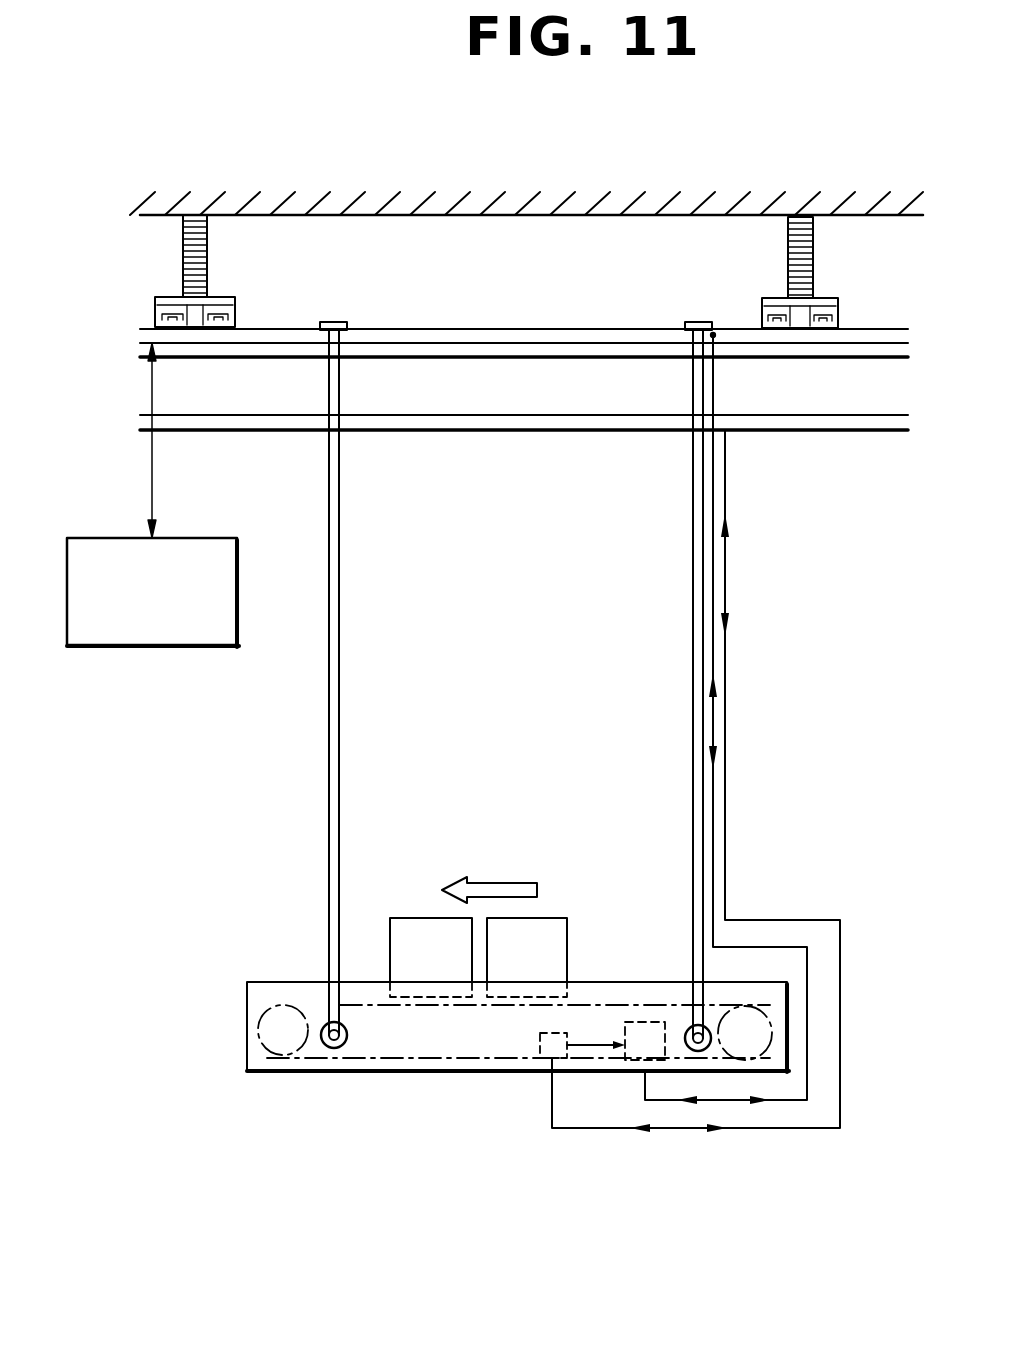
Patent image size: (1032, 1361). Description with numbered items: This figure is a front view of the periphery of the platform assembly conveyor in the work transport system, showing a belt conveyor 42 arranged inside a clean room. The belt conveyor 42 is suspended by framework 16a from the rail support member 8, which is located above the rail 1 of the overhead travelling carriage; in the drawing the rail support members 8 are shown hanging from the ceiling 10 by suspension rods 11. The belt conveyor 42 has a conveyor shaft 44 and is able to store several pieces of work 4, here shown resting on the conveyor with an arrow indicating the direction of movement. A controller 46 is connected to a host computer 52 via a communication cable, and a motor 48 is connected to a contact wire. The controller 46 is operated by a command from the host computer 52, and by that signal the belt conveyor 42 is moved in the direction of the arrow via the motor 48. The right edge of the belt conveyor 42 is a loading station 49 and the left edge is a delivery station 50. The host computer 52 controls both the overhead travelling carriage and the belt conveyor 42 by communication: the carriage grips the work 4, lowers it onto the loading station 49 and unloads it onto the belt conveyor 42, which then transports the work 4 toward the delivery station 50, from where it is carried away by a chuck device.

The rail 1 is at (847, 432).
The work 4 is at (412, 918).
The rail support member 8 is at (222, 297).
The ceiling 10 is at (883, 217).
The suspension rod 11 is at (207, 247).
The framework 16a is at (329, 782).
The belt conveyor 42 is at (400, 1058).
The conveyor shaft 44 is at (284, 1033).
The controller 46 is at (545, 1058).
The motor 48 is at (638, 1022).
The loading station 49 is at (741, 997).
The delivery station 50 is at (275, 986).
The host computer 52 is at (132, 647).